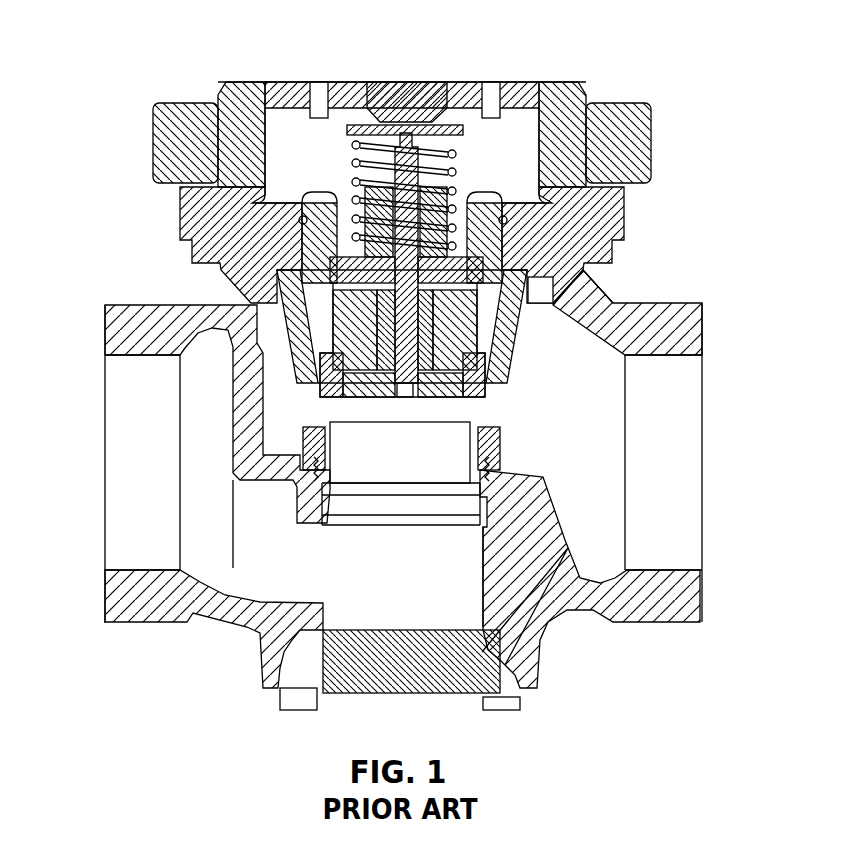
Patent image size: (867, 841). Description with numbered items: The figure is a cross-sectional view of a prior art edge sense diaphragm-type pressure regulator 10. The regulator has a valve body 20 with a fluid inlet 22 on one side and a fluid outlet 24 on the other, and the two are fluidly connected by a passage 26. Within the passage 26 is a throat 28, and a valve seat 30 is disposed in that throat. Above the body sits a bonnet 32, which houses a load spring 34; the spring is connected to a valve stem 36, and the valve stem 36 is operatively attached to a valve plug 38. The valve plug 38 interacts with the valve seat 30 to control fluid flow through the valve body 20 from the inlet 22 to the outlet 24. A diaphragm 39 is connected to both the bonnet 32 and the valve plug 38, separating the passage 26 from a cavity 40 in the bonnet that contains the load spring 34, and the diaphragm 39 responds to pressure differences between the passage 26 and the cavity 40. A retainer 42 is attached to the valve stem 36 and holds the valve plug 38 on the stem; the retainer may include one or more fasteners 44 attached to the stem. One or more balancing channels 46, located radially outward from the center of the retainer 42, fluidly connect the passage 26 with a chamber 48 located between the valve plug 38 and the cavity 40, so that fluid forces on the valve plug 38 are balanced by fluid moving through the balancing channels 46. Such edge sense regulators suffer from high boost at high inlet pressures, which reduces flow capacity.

The pressure regulator 10 is at (666, 42).
The valve body 20 is at (573, 617).
The fluid inlet 22 is at (118, 503).
The fluid outlet 24 is at (677, 480).
The passage 26 is at (594, 448).
The throat 28 is at (394, 533).
The valve seat 30 is at (310, 433).
The bonnet 32 is at (610, 212).
The load spring 34 is at (498, 193).
The valve stem 36 is at (460, 190).
The valve plug 38 is at (583, 286).
The diaphragm 39 is at (293, 337).
The cavity 40 is at (320, 142).
The retainer 42 is at (450, 398).
The fasteners 44 is at (403, 398).
The balancing channels 46 is at (463, 380).
The chamber 48 is at (345, 260).